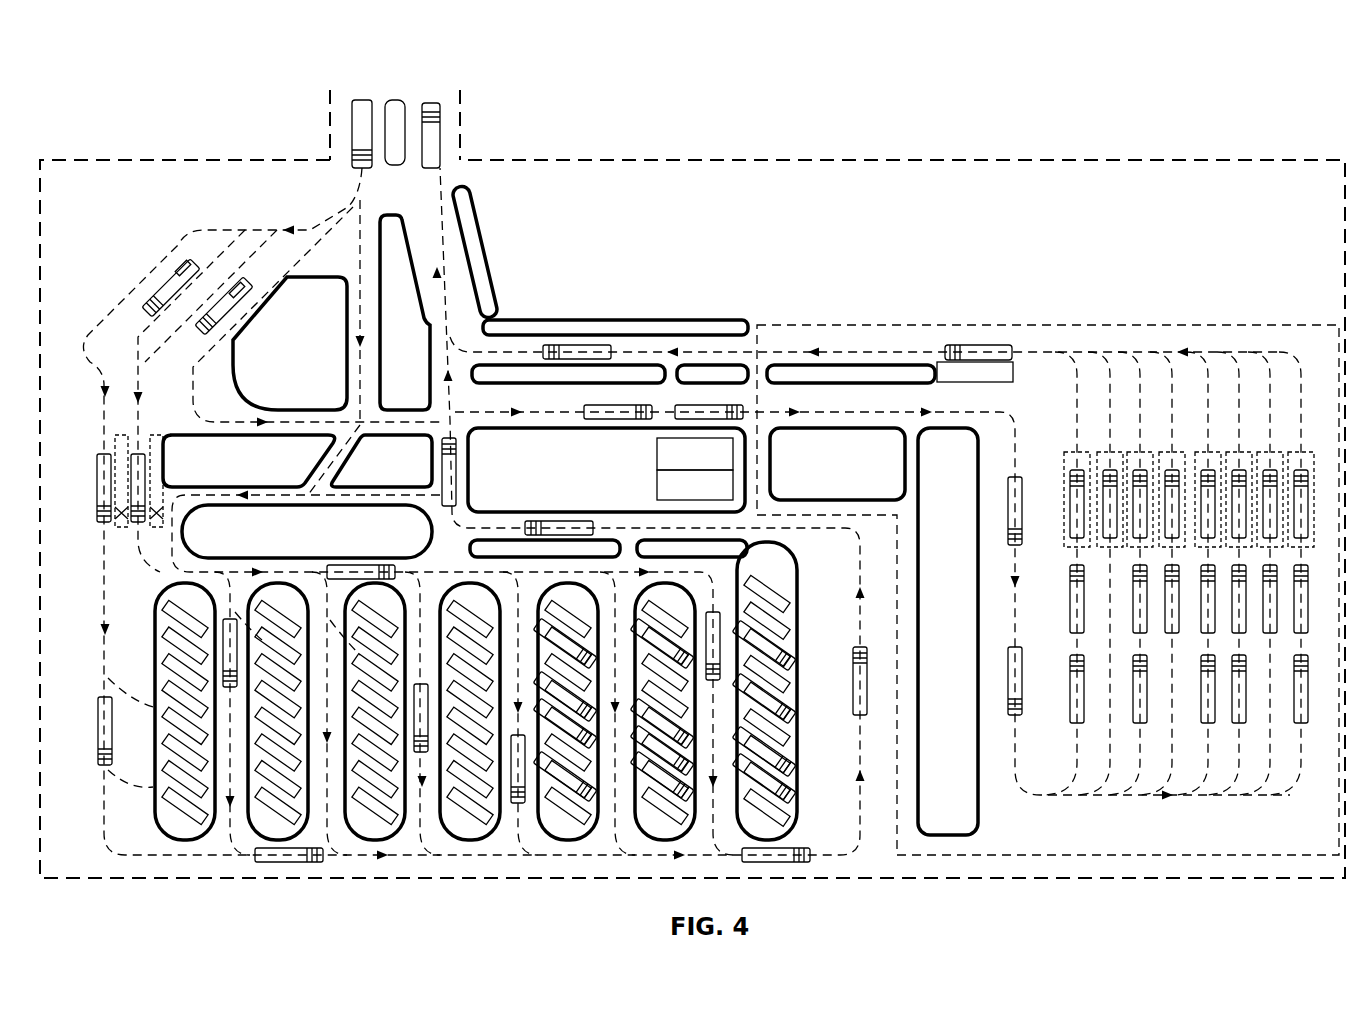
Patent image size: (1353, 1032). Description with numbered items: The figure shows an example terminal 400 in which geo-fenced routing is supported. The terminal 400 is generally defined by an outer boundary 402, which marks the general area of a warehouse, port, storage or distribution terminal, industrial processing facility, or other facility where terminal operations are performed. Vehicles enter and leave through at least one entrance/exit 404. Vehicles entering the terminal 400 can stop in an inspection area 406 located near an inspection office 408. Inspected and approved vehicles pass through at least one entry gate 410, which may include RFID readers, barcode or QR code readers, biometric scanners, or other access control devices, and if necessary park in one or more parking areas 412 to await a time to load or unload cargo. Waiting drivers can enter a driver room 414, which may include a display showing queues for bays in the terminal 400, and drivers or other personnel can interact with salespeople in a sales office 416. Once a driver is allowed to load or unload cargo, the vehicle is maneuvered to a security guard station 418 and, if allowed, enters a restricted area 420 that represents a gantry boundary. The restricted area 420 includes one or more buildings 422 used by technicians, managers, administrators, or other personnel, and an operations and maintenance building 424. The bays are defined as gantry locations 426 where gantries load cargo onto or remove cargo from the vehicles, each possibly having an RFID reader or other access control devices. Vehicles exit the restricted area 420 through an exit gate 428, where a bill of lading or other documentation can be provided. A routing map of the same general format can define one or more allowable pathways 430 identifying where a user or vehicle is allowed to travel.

The terminal 400 is at (806, 73).
The outer boundary 402 is at (927, 157).
The entrance/exit 404 is at (326, 127).
The inspection area 406 is at (164, 248).
The inspection office 408 is at (320, 363).
The entry gate 410 is at (150, 422).
The parking area 412 is at (472, 583).
The driver room 414 is at (648, 484).
The sales office 416 is at (648, 457).
The security guard station 418 is at (712, 368).
The restricted area 420 is at (950, 300).
The buildings 422 is at (865, 478).
The operations and maintenance building 424 is at (970, 647).
The gantry locations 426 is at (1063, 440).
The exit gate 428 is at (1025, 367).
The allowable pathways 430 is at (88, 685).